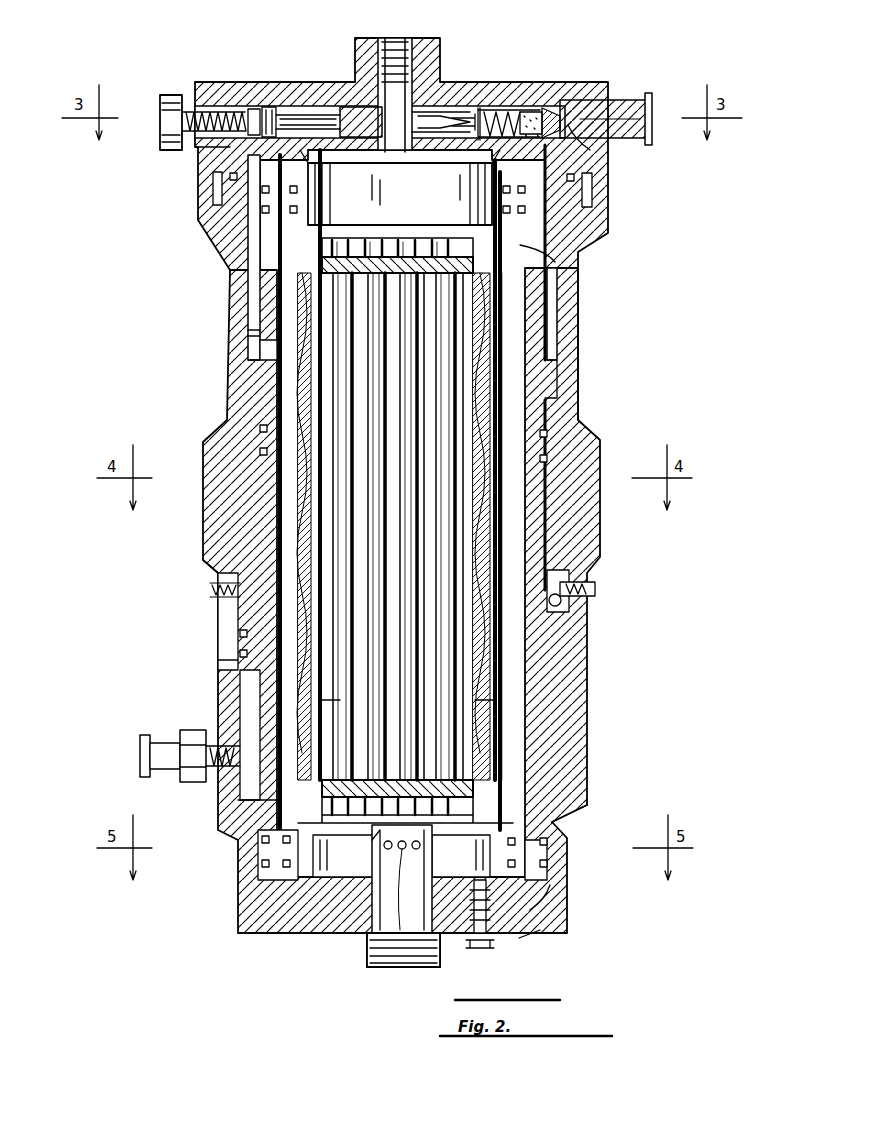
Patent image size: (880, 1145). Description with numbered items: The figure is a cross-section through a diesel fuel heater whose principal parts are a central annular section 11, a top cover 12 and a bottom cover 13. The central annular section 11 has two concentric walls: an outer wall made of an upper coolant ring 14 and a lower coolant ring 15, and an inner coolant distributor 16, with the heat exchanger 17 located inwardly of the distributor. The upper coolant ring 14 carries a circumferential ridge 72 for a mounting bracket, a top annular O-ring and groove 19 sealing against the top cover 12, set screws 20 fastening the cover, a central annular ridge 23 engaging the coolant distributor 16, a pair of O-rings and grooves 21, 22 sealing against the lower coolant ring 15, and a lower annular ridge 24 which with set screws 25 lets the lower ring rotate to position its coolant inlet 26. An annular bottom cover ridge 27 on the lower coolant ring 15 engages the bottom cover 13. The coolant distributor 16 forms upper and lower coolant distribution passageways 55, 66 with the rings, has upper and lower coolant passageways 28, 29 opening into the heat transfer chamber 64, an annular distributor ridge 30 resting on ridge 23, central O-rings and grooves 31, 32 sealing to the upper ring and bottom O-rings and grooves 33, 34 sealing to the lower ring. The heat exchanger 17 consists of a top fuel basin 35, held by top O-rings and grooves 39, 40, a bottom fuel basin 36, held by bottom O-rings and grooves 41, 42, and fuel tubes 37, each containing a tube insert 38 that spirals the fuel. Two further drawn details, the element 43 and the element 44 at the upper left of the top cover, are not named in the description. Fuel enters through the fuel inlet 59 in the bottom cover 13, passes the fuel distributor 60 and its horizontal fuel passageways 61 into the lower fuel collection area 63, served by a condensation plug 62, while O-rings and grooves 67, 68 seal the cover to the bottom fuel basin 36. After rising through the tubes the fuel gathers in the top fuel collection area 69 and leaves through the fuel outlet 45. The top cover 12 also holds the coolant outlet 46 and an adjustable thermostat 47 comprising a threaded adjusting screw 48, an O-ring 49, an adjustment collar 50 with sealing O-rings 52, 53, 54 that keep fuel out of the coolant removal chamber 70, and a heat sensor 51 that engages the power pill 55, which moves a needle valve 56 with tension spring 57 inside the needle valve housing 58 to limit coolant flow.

The central annular section 11 is at (656, 418).
The top cover 12 is at (448, 154).
The bottom cover 13 is at (536, 958).
The upper coolant ring 14 is at (203, 415).
The lower coolant ring 15 is at (230, 655).
The coolant distributor 16 is at (255, 552).
The heat exchanger 17 is at (290, 525).
The top annular O-ring and groove 19 is at (268, 148).
The set screws 20 is at (240, 170).
The O-ring and groove 21 is at (240, 608).
The O-ring and groove 22 is at (240, 633).
The central annular ridge 23 is at (292, 378).
The lower annular ridge 24 is at (550, 612).
The set screws 25 is at (588, 582).
The coolant inlet 26 is at (140, 752).
The annular bottom cover ridge 27 is at (265, 918).
The upper coolant passageways 28 is at (262, 322).
The lower coolant passageways 29 is at (240, 812).
The annular distributor ridge 30 is at (560, 375).
The O-ring and groove 31 is at (548, 432).
The O-ring and groove 32 is at (550, 458).
The bottom O-ring and groove 33 is at (560, 838).
The bottom O-ring and groove 34 is at (550, 862).
The top fuel basin 35 is at (548, 265).
The bottom fuel basin 36 is at (565, 805).
The fuel tubes 37 is at (490, 718).
The tube insert 38 is at (490, 688).
The top O-ring and groove 39 is at (572, 200).
The top O-ring and groove 40 is at (588, 210).
The bottom O-ring and groove 41 is at (262, 840).
The bottom O-ring and groove 42 is at (262, 863).
The boss 43 is at (297, 167).
The tie rod 44 is at (247, 208).
The fuel outlet 45 is at (404, 42).
The coolant outlet 46 is at (636, 104).
The adjustable thermostat 47 is at (164, 97).
The threaded adjusting screw 48 is at (210, 108).
The O-ring 49 is at (272, 106).
The adjustment collar 50 is at (256, 108).
The heat sensor 51 is at (368, 104).
The sealing O-ring 52 is at (448, 104).
The sealing O-ring 53 is at (466, 108).
The sealing O-ring 54 is at (480, 112).
The power pill 55 is at (520, 110).
The needle valve 56 is at (556, 108).
The tension spring 57 is at (596, 108).
The needle valve housing 58 is at (592, 130).
The fuel inlet 59 is at (402, 967).
The fuel distributor 60 is at (337, 880).
The fuel passageways 61 is at (362, 928).
The condensation plug 62 is at (480, 950).
The lower fuel collection area 63 is at (322, 877).
The heat transfer chamber 64 is at (262, 348).
The lower coolant distribution passageway 66 is at (250, 710).
The O-ring and groove 67 is at (560, 882).
The O-ring and groove 68 is at (532, 918).
The top fuel collection area 69 is at (565, 250).
The coolant removal chamber 70 is at (576, 170).
The circumferential ridge 72 is at (212, 455).